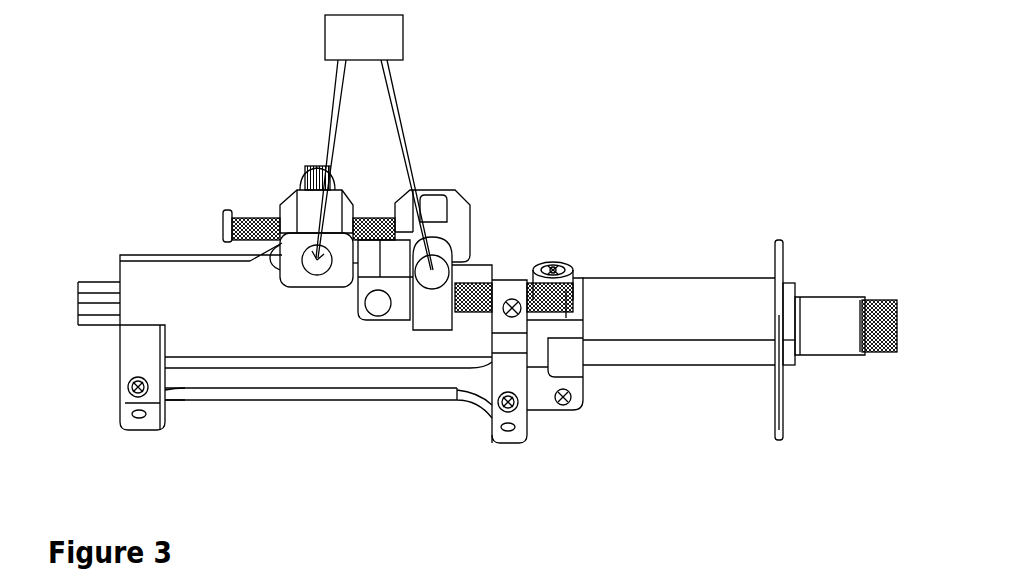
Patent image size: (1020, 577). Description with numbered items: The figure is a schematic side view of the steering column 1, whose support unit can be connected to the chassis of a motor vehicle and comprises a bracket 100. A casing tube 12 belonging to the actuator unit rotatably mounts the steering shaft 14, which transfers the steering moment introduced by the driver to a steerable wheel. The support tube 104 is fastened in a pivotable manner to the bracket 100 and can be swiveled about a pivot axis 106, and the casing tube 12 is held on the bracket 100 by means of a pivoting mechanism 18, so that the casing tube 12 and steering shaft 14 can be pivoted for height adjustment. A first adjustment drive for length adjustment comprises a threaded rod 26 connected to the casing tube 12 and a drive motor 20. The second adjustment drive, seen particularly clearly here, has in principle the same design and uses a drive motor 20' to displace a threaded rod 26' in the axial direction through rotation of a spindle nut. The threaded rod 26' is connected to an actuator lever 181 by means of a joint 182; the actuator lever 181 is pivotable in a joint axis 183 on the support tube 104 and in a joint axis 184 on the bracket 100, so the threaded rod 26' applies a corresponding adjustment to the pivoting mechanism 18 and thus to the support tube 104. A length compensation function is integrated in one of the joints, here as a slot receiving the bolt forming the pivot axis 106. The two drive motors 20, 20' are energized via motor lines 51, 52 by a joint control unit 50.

The steering column 1 is at (646, 183).
The casing tube 12 is at (673, 293).
The steering shaft 14 is at (832, 315).
The pivoting mechanism 18 is at (594, 358).
The drive motor 20 is at (294, 207).
The drive motor 20' is at (442, 234).
The threaded rod 26 is at (279, 200).
The threaded rod 26' is at (519, 234).
The control unit 50 is at (340, 35).
The motor line 51 is at (338, 97).
The motor line 52 is at (393, 103).
The bracket 100 is at (273, 385).
The support tube 104 is at (345, 343).
The pivot axis 106 is at (145, 400).
The actuator lever 181 is at (513, 347).
The joint 182 is at (560, 266).
The joint axis 183 is at (570, 405).
The joint axis 184 is at (513, 418).